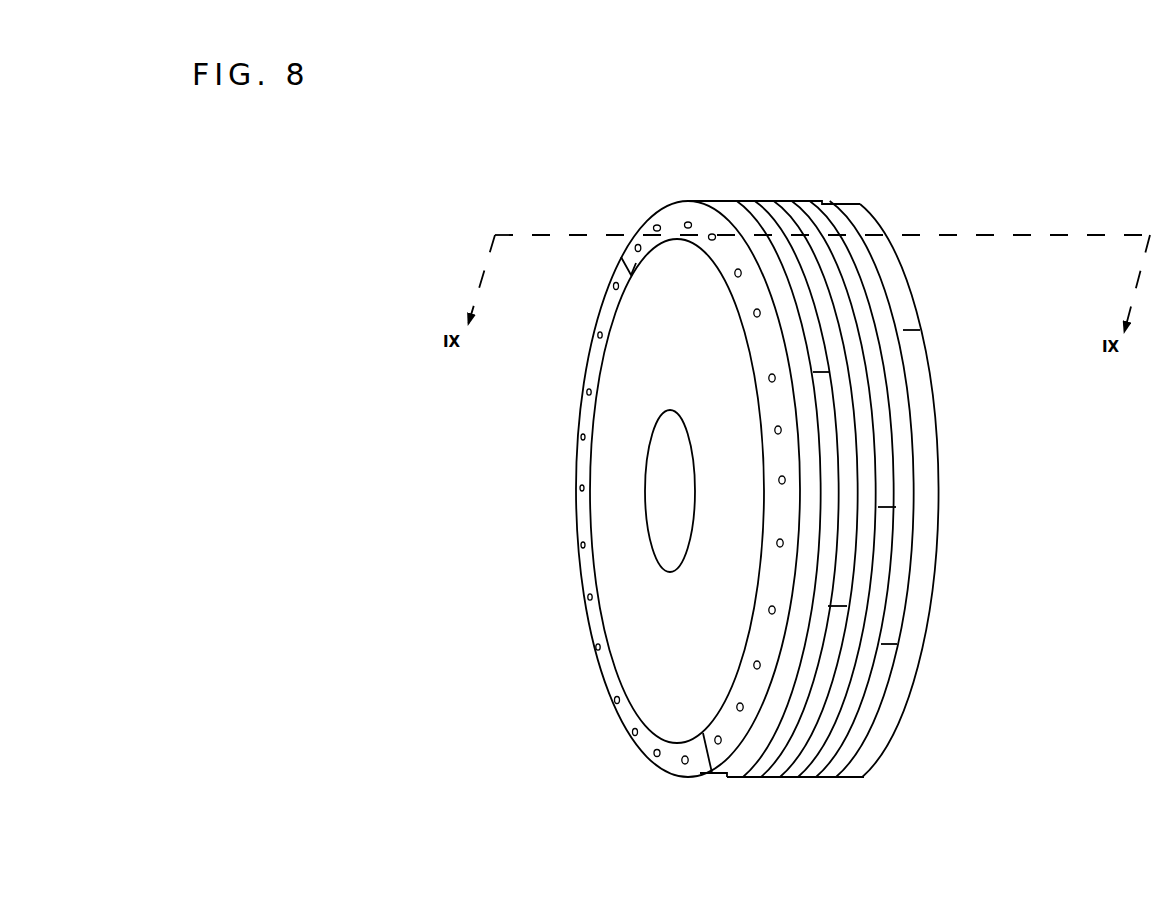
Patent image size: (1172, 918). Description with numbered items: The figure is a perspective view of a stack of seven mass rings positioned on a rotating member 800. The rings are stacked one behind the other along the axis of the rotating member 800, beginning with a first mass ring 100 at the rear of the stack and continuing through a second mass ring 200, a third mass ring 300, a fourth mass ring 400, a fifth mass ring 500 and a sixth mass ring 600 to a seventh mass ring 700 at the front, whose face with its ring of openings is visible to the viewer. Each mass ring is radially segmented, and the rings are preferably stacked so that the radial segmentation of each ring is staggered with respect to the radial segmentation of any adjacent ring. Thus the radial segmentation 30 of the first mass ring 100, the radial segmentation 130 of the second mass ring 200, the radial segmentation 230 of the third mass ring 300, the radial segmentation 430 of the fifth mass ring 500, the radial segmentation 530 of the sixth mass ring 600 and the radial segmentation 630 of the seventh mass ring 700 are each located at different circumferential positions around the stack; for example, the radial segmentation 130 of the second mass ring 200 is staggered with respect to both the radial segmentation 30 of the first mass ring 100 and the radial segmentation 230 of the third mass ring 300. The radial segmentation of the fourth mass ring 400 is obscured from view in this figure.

The first mass ring 100 is at (860, 205).
The second mass ring 200 is at (822, 201).
The third mass ring 300 is at (794, 199).
The fourth mass ring 400 is at (778, 199).
The fifth mass ring 500 is at (748, 199).
The sixth mass ring 600 is at (731, 199).
The seventh mass ring 700 is at (686, 199).
The rotating member 800 is at (627, 472).
The radial segmentation 30 is at (908, 329).
The radial segmentation 130 is at (897, 644).
The radial segmentation 230 is at (896, 507).
The radial segmentation 430 is at (847, 606).
The radial segmentation 530 is at (830, 372).
The radial segmentation 630 is at (627, 268).